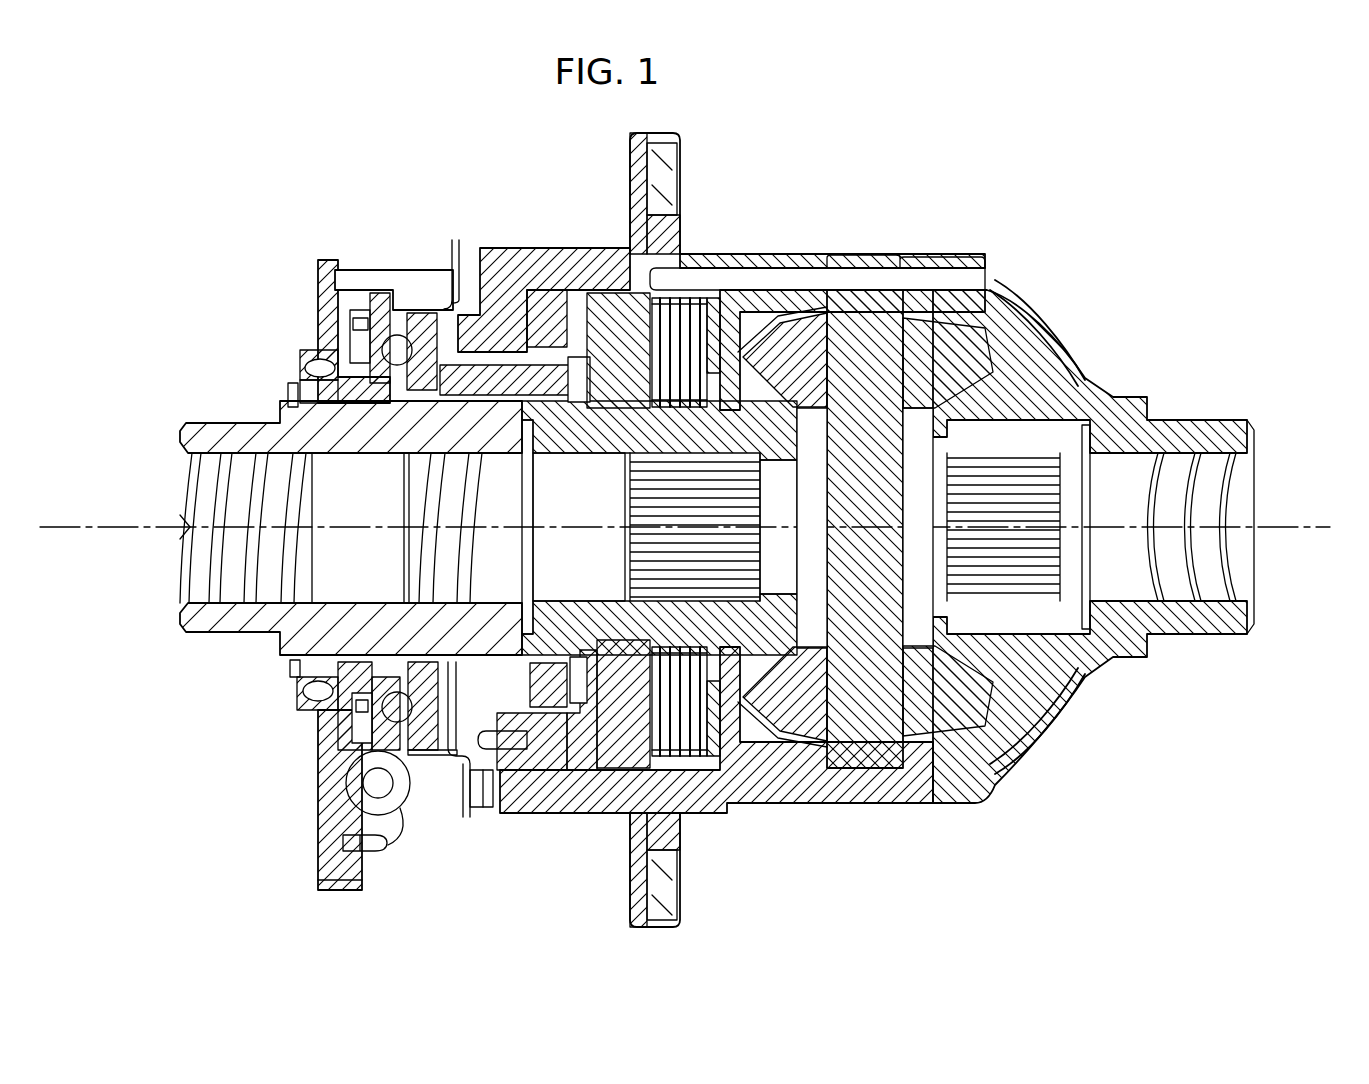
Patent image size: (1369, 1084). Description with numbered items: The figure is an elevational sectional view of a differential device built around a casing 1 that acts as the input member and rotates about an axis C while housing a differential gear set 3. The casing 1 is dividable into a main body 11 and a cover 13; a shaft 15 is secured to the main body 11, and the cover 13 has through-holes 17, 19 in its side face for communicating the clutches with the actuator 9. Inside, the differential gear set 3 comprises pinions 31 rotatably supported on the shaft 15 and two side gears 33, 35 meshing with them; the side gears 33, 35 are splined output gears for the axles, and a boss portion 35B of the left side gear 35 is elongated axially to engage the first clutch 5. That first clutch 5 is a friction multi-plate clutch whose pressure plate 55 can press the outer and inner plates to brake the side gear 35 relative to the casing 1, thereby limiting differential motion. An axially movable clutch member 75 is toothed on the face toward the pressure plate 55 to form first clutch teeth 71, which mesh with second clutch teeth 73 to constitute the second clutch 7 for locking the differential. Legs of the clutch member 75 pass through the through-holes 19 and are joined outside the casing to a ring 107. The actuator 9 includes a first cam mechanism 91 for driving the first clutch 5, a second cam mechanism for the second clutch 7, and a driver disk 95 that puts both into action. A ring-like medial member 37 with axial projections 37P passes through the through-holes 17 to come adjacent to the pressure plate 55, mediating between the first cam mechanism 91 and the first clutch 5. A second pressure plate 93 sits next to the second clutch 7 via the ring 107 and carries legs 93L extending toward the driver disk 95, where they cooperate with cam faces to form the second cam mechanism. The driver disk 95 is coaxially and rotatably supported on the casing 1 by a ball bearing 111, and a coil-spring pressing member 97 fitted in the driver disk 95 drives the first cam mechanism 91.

The casing 1 is at (1086, 313).
The differential gear set 3 is at (899, 620).
The first clutch 5 is at (704, 234).
The second clutch 7 is at (623, 452).
The actuator 9 is at (403, 246).
The main body 11 is at (764, 253).
The cover 13 is at (497, 248).
The shaft 15 is at (858, 255).
The through-holes 17 is at (517, 403).
The through-holes 19 is at (528, 700).
The pinions 31 is at (842, 786).
The side gear 33 is at (981, 613).
The side gear 35 is at (775, 745).
The boss portion 35B is at (577, 454).
The medial member 37 is at (467, 316).
The projections 37P is at (555, 660).
The pressure plate 55 is at (606, 814).
The first clutch teeth 71 is at (556, 300).
The second clutch teeth 73 is at (583, 307).
The clutch member 75 is at (530, 772).
The first cam mechanism 91 is at (421, 764).
The second pressure plate 93 is at (455, 818).
The legs 93L is at (410, 268).
The driver disk 95 is at (320, 838).
The pressing member 97 is at (395, 802).
The ring 107 is at (475, 810).
The ball bearing 111 is at (300, 357).
The axis C is at (1313, 527).